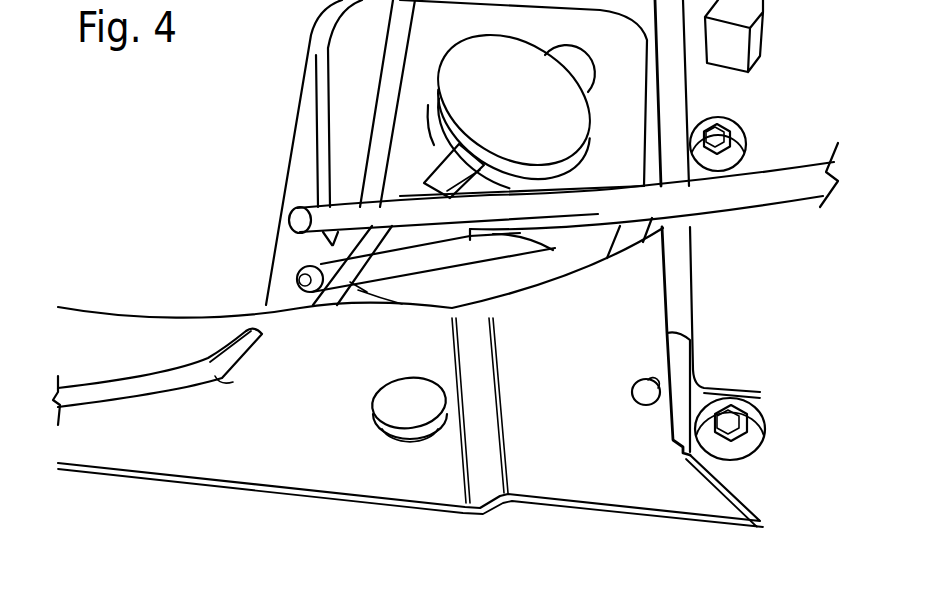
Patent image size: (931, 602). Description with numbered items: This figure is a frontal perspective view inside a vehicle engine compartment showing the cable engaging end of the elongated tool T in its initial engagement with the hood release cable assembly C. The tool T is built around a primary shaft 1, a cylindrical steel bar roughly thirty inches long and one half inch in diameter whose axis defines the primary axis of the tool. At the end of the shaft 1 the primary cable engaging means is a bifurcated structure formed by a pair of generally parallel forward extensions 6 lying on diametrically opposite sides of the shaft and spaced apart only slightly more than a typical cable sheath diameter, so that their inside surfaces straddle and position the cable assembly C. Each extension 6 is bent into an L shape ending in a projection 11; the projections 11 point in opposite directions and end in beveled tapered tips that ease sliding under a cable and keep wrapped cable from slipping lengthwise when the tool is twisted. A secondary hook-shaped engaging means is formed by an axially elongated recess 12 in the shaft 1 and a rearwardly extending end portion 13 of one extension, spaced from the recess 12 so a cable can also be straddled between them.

The primary tool body or shaft 1 is at (742, 197).
The forward extensions 6 is at (330, 218).
The projections 11 is at (297, 226).
The axially elongated recess 12 is at (532, 226).
The rearwardly extending end portion 13 is at (499, 250).
The hood release cable assembly C is at (382, 157).
The elongated tool T is at (710, 215).
The vehicle body base V is at (597, 508).